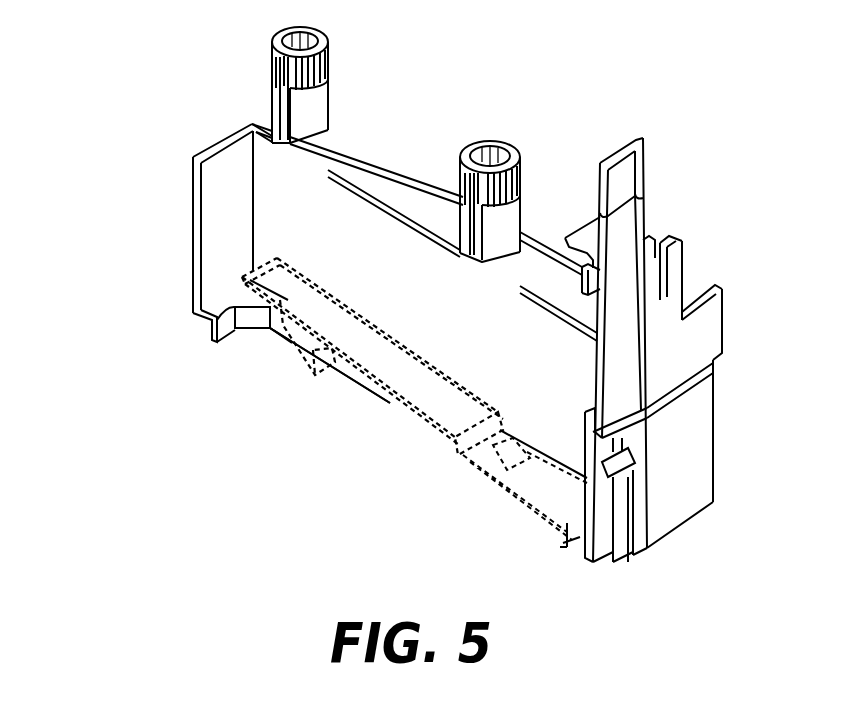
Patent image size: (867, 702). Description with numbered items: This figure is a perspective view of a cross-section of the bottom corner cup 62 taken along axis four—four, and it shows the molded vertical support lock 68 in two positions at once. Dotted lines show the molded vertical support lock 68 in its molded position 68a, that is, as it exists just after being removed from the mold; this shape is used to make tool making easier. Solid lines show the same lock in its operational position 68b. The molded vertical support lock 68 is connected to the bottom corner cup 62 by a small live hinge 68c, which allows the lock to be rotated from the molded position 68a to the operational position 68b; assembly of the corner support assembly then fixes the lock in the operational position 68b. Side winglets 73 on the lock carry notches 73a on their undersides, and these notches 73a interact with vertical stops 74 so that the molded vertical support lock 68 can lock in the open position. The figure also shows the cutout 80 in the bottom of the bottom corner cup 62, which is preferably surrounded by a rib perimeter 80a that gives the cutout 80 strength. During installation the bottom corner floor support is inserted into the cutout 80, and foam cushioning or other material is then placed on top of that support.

The bottom corner cup 62 is at (178, 212).
The molded vertical support lock 68 is at (640, 133).
The molded position of vertical support lock 68a is at (237, 299).
The operational position of vertical support lock 68b is at (590, 390).
The live hinge 68c is at (565, 550).
The side winglets 73 is at (380, 316).
The notches 73a is at (330, 367).
The vertical stops 74 is at (661, 271).
The cutout 80 is at (366, 418).
The rib perimeter 80a is at (257, 333).